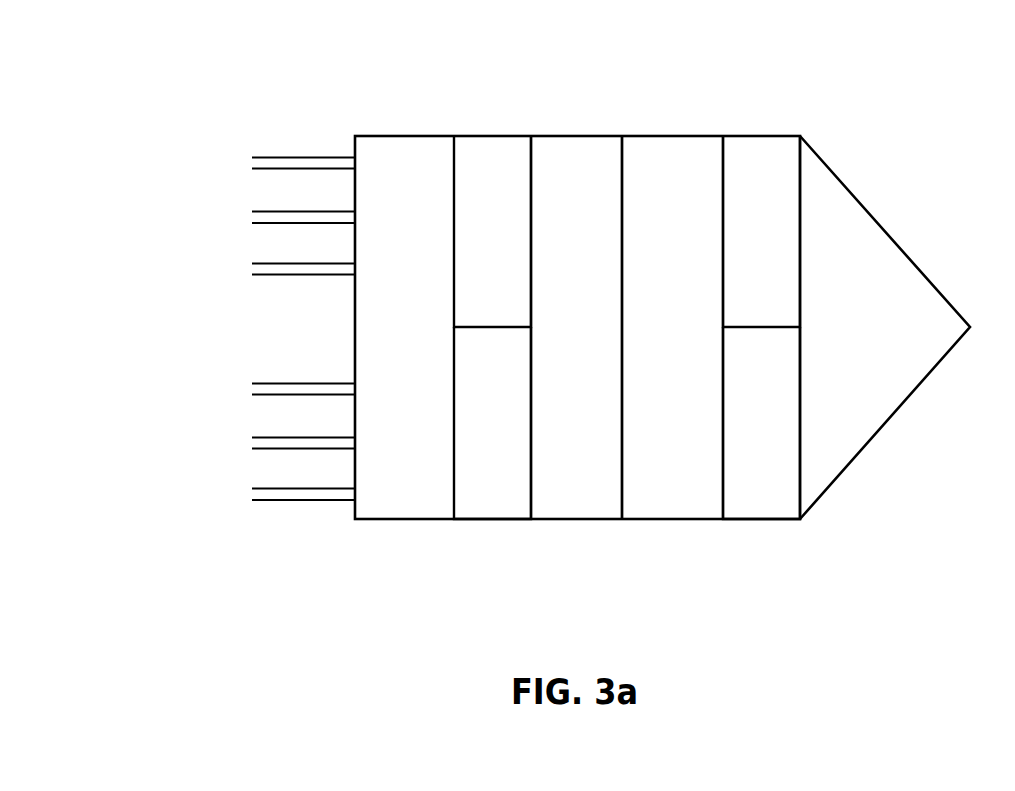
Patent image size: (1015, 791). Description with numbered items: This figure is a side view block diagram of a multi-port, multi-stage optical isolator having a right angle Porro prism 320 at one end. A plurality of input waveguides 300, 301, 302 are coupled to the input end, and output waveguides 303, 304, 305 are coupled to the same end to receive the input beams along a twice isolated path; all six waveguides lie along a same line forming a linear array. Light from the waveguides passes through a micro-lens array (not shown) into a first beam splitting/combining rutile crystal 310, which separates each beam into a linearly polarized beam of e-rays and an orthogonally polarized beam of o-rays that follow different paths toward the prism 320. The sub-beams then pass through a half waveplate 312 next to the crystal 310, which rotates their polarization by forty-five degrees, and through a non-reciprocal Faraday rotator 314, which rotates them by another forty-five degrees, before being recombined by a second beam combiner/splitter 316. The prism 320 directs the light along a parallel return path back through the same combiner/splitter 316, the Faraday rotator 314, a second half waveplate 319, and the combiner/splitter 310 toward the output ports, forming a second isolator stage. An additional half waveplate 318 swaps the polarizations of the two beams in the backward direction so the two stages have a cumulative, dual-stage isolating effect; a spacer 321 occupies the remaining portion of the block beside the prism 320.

The input waveguide 300 is at (250, 162).
The input waveguide 301 is at (250, 218).
The input waveguide 302 is at (250, 269).
The output waveguide 303 is at (250, 389).
The output waveguide 304 is at (250, 443).
The output waveguide 305 is at (250, 495).
The beam splitting/combining rutile crystal 310 is at (383, 503).
The half waveplate 312 is at (487, 157).
The Faraday rotator 314 is at (598, 503).
The beam combiner/splitter 316 is at (666, 503).
The additional half waveplate 318 is at (742, 150).
The half waveplate 319 is at (490, 503).
The Porro prism 320 is at (875, 435).
The spacer 321 is at (775, 503).